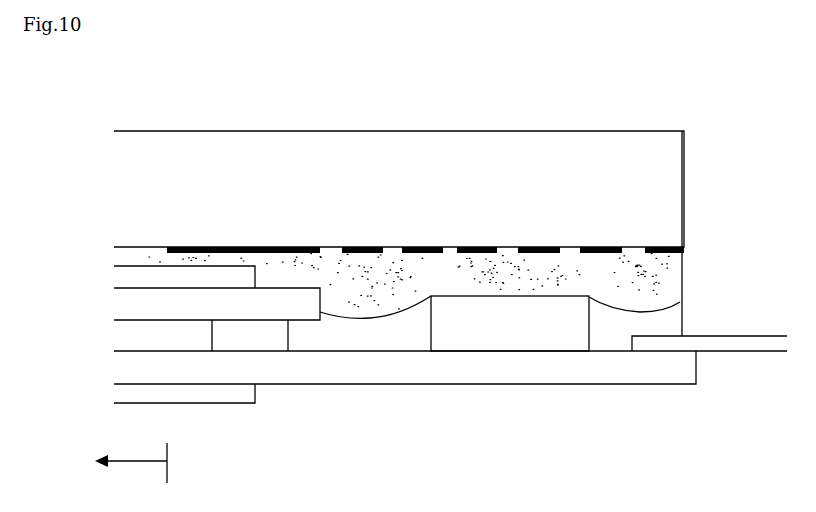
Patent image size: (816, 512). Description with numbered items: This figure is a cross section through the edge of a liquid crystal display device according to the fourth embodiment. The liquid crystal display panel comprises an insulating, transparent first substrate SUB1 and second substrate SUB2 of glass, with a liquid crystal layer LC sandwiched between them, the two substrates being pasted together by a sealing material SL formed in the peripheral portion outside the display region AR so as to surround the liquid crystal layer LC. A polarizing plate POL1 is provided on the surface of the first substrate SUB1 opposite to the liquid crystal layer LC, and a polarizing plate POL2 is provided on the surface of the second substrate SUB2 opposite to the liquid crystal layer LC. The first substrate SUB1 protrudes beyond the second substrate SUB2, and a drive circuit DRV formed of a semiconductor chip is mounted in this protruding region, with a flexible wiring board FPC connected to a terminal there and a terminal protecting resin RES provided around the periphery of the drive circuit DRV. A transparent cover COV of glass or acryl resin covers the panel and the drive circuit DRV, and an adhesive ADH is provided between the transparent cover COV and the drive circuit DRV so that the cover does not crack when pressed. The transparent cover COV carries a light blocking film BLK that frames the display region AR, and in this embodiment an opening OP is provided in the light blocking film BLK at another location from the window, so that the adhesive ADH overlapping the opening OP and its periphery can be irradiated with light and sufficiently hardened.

The transparent cover COV is at (297, 192).
The light blocking film BLK is at (468, 250).
The opening OP is at (450, 250).
The adhesive ADH is at (562, 277).
The polarizing plate POL2 is at (142, 273).
The second substrate SUB2 is at (298, 302).
The liquid crystal layer LC is at (162, 340).
The sealing material SL is at (260, 345).
The first substrate SUB1 is at (387, 368).
The polarizing plate POL1 is at (213, 395).
The terminal protecting resin RES is at (347, 340).
The drive circuit DRV is at (530, 332).
The flexible wiring board FPC is at (725, 345).
The display region AR is at (108, 463).